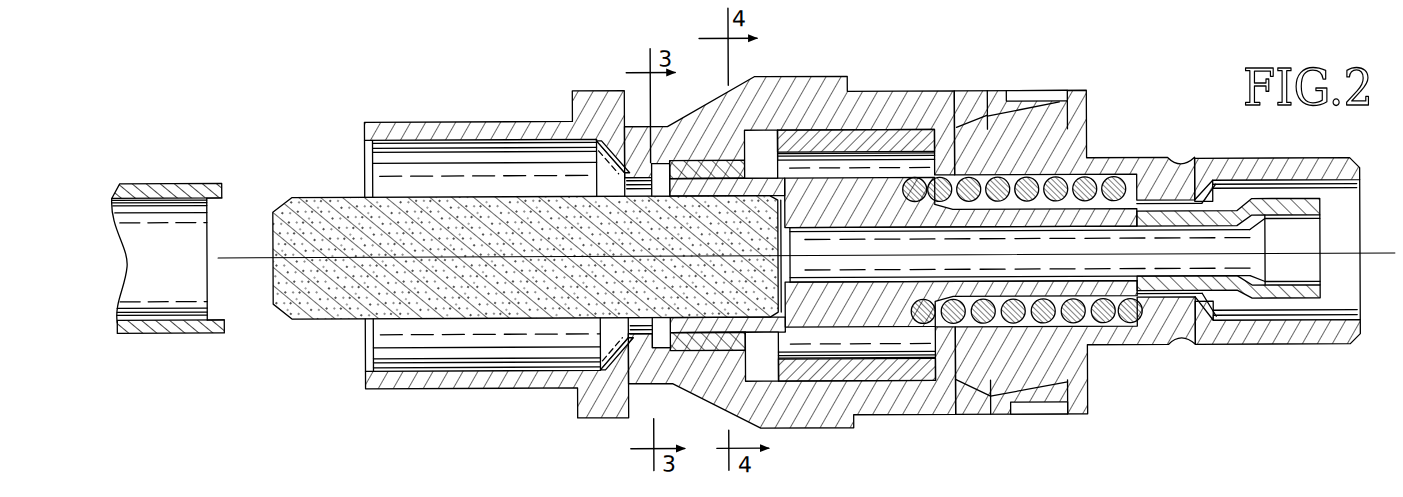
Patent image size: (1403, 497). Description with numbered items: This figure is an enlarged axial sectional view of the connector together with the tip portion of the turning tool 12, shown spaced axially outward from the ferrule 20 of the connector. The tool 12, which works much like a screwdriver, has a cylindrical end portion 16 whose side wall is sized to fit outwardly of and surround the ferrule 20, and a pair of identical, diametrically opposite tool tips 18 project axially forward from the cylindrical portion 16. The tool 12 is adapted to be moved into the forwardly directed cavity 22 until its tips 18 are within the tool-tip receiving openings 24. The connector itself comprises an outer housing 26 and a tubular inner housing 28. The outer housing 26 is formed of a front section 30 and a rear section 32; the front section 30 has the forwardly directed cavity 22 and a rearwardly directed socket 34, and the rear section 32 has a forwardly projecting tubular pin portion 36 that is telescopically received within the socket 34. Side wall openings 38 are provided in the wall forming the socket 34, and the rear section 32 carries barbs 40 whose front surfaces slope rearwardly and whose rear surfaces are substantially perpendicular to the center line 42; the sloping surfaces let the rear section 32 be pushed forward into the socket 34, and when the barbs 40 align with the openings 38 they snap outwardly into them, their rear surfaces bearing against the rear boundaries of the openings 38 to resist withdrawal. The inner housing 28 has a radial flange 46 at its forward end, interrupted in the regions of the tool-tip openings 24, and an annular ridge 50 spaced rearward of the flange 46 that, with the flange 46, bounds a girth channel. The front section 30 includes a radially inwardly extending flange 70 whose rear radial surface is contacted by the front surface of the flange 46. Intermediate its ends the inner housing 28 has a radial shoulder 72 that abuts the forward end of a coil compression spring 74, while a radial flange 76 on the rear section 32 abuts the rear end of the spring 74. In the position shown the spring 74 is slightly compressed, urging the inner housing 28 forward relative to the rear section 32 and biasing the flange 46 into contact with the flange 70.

The turning tool 12 is at (156, 333).
The cylindrical end portion 16 is at (190, 332).
The tool tips 18 is at (223, 181).
The ferrule 20 is at (503, 300).
The cavity 22 is at (474, 147).
The tool-tip receiving openings 24 is at (655, 185).
The outer housing 26 is at (842, 76).
The inner housing 28 is at (877, 338).
The front section 30 is at (421, 120).
The rear section 32 is at (1075, 147).
The rearwardly directed socket 34 is at (850, 140).
The tubular pin portion 36 is at (887, 158).
The side wall openings 38 is at (968, 102).
The barbs 40 is at (1035, 115).
The center line 42 is at (793, 282).
The radial flange 46 is at (665, 163).
The annular ridge 50 is at (766, 129).
The radially inwardly extending flange 70 is at (633, 167).
The radial shoulder 72 is at (940, 300).
The coil compression spring 74 is at (1108, 322).
The radial flange 76 is at (1134, 176).